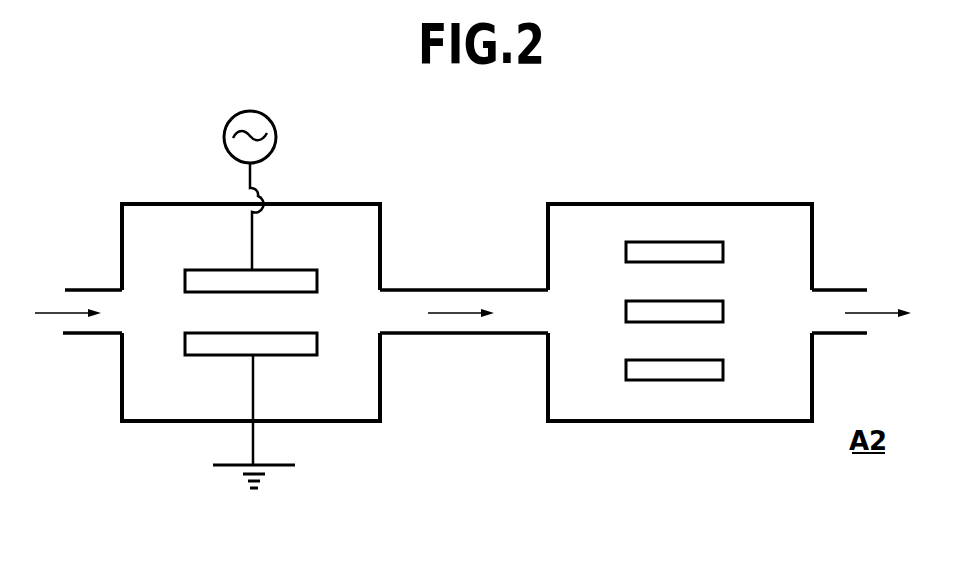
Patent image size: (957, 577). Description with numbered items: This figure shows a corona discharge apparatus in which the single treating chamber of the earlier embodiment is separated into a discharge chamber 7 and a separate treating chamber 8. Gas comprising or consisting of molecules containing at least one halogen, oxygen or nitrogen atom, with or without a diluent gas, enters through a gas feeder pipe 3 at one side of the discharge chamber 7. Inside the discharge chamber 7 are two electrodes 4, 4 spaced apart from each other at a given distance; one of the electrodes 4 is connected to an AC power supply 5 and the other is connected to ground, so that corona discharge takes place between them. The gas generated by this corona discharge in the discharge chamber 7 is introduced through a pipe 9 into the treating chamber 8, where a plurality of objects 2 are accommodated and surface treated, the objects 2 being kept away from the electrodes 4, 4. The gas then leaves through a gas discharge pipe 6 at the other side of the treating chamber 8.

The objects 2 is at (723, 252).
The gas feeder pipe 3 is at (90, 290).
The electrodes 4 is at (280, 270).
The AC power supply 5 is at (277, 133).
The gas discharge pipe 6 is at (848, 333).
The discharge chamber 7 is at (343, 203).
The treating chamber 8 is at (665, 203).
The pipe 9 is at (460, 291).